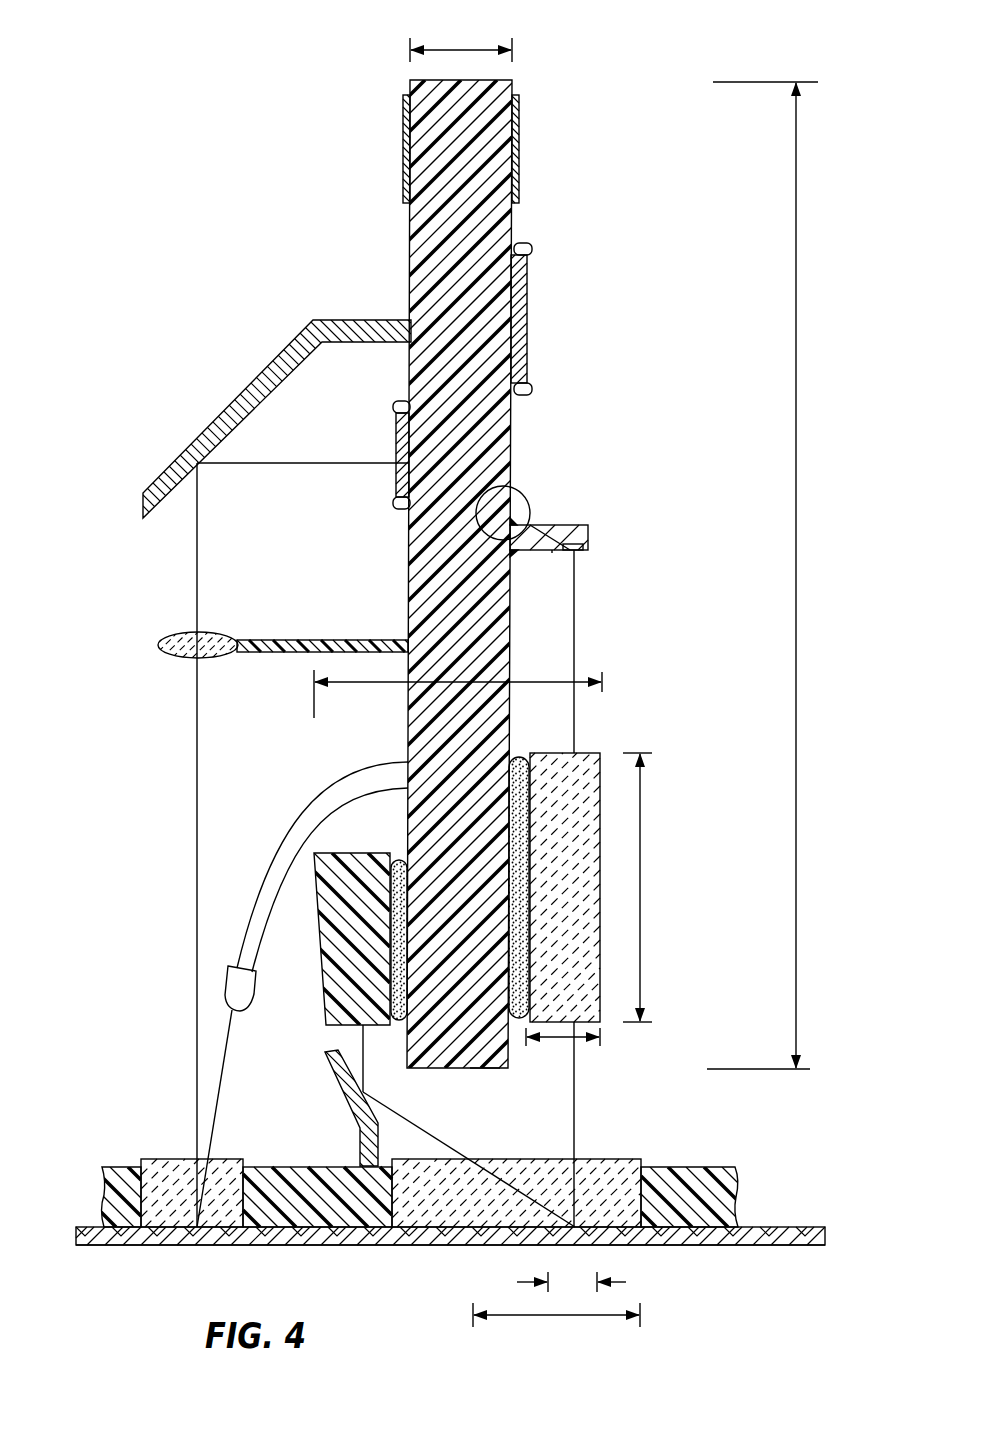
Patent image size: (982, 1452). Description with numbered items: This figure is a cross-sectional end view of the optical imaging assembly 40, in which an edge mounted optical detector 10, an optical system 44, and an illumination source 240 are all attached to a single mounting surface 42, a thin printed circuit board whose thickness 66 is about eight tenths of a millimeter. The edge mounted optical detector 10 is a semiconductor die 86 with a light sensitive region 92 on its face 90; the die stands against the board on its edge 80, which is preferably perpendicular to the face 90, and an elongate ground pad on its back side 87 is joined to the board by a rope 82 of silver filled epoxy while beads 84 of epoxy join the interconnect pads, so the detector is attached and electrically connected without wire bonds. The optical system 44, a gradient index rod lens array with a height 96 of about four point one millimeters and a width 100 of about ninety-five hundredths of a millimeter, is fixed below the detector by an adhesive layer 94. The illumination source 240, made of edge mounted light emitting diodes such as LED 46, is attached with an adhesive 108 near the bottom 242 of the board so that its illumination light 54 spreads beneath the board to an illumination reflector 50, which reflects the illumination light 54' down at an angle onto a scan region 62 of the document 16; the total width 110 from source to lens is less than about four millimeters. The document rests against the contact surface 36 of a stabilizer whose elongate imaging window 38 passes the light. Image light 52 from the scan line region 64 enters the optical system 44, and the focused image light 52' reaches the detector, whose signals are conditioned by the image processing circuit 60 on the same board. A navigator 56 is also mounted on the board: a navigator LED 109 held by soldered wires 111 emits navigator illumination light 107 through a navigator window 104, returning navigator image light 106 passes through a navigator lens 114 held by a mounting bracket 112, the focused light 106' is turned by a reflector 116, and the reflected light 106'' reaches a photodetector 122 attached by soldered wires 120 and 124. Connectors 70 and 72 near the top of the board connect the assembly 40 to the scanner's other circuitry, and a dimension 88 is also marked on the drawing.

The edge mounted optical detector 10 is at (612, 515).
The document 16 is at (680, 1245).
The contact surface 36 is at (720, 1245).
The imaging window 38 is at (625, 1159).
The optical imaging assembly 40 is at (579, 62).
The printed circuit board 42 is at (409, 270).
The optical system 44 is at (598, 753).
The light emitting diode 46 is at (324, 985).
The illumination reflector 50 is at (324, 1060).
The image light 52 is at (602, 1124).
The image light 52' is at (605, 651).
The illumination light 54 is at (379, 1062).
The illumination light 54' is at (469, 1159).
The position detector 56 is at (150, 712).
The image processing circuit 60 is at (527, 310).
The scan region 62 is at (503, 1315).
The scan line region 64 is at (620, 1283).
The thickness 66 is at (451, 50).
The connector 70 is at (402, 112).
The connector 72 is at (520, 112).
The edge 80 is at (512, 487).
The rope of silver filled epoxy 82 is at (514, 522).
The bead of silver filled epoxy 84 is at (514, 551).
The semiconductor die 86 is at (583, 525).
The back side 87 is at (552, 525).
The overall height dimension 88 is at (779, 575).
The face 90 is at (552, 550).
The light sensitive region 92 is at (588, 550).
The adhesive layer 94 is at (520, 758).
The height 96 is at (641, 874).
The width 100 is at (553, 1042).
The navigator window 104 is at (176, 1159).
The navigator image light 106 is at (161, 1038).
The navigator image light 106' is at (236, 656).
The reflected navigator image light 106'' is at (303, 491).
The navigator illumination light 107 is at (222, 1061).
The adhesive 108 is at (396, 860).
The navigator LED 109 is at (225, 991).
The total width 110 is at (372, 690).
The soldered wires 111 is at (318, 828).
The mounting bracket 112 is at (340, 640).
The navigator lens 114 is at (160, 638).
The reflector 116 is at (192, 443).
The soldered wire 120 is at (393, 504).
The photodetector 122 is at (396, 438).
The soldered wire 124 is at (393, 405).
The illumination source 240 is at (316, 920).
The bottom 242 is at (482, 1068).